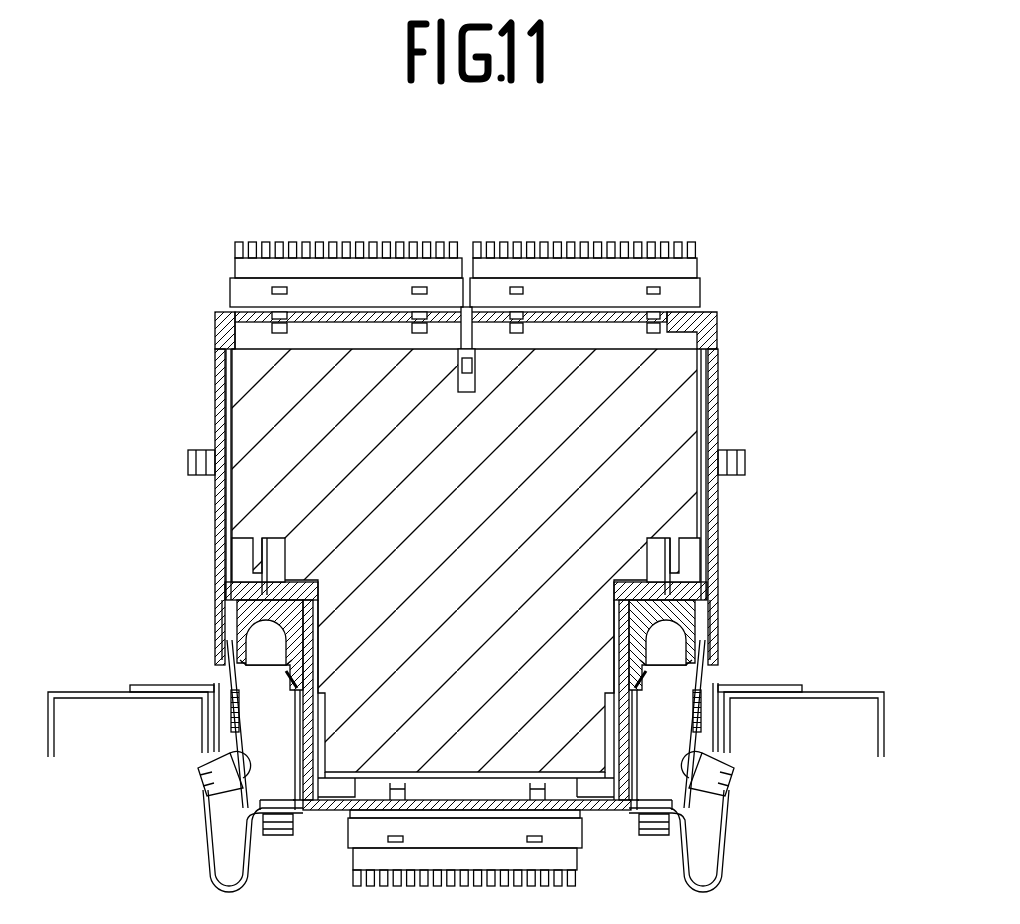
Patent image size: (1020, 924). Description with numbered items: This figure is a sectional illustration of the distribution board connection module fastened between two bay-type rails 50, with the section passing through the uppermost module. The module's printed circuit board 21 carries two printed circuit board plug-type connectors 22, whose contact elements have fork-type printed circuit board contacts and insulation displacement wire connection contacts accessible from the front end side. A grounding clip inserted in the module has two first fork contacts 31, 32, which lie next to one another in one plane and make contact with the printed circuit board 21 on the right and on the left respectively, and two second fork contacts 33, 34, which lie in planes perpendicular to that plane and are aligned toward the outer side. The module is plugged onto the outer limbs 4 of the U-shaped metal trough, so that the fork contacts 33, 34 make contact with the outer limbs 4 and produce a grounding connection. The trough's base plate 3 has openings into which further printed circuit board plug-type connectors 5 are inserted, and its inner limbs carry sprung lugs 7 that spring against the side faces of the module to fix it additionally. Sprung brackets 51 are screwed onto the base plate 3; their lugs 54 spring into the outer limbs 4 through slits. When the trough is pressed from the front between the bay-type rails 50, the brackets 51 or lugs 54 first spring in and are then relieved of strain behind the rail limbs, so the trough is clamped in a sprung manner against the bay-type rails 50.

The base plate 3 is at (606, 805).
The outer limb 4 is at (700, 676).
The printed circuit board plug-type connector 5 is at (472, 860).
The sprung lug 7 is at (294, 682).
The printed circuit board 21 is at (246, 415).
The printed circuit board plug-type connector 22 is at (507, 267).
The first fork contact 31 is at (676, 563).
The first fork contact 32 is at (257, 563).
The second fork contact 33 is at (223, 633).
The second fork contact 34 is at (708, 617).
The bay-type rail 50 is at (113, 692).
The sprung bracket 51 is at (205, 836).
The lug 54 is at (219, 768).